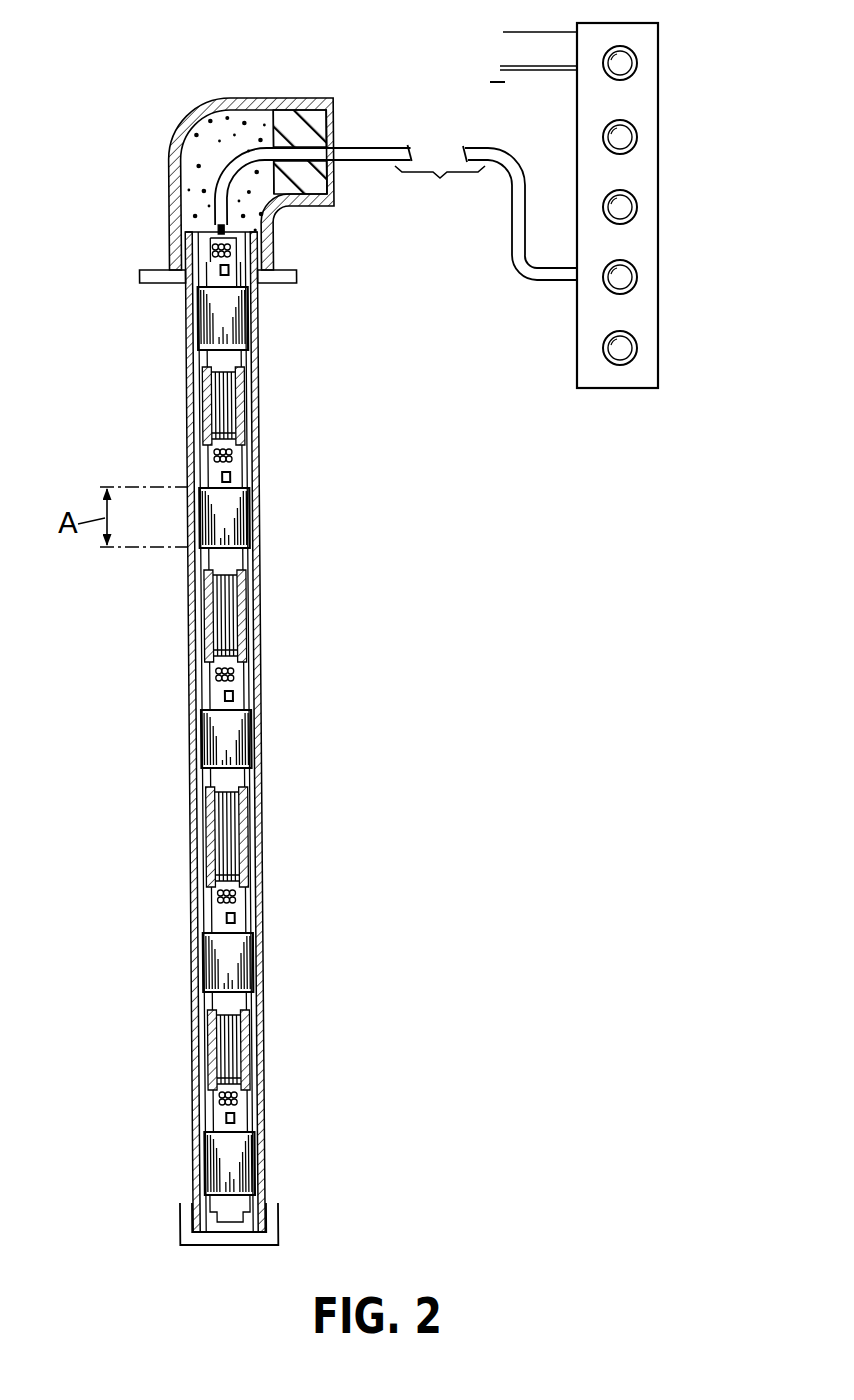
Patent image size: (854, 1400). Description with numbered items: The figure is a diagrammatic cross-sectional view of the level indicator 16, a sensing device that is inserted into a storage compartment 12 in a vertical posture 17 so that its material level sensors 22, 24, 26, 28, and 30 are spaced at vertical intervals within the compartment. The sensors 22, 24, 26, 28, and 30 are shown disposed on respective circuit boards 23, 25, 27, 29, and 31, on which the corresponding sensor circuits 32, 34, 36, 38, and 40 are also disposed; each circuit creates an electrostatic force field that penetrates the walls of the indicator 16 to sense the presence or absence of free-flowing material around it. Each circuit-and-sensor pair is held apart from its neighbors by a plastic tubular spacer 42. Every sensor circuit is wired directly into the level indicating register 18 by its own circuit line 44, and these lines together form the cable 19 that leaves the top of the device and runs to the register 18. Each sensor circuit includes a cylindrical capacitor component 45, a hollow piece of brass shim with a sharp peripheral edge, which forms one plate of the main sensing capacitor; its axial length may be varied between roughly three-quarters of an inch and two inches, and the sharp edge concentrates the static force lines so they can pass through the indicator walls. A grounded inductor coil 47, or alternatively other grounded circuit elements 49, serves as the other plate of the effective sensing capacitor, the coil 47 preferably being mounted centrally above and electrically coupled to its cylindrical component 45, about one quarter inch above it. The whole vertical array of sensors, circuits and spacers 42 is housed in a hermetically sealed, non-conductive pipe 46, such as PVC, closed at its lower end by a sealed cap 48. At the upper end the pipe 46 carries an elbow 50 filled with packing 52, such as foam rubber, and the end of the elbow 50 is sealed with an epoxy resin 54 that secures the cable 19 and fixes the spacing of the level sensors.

The storage compartment 12 is at (152, 270).
The level indicator 16 is at (209, 733).
The vertical posture 17 is at (268, 362).
The level indicating register 18 is at (563, 148).
The cable 19 is at (331, 151).
The material level sensor 22 is at (275, 1133).
The circuit board 23 is at (238, 1108).
The material level sensor 24 is at (270, 978).
The circuit board 25 is at (240, 903).
The material level sensor 26 is at (267, 730).
The circuit board 27 is at (239, 688).
The material level sensor 28 is at (270, 543).
The circuit board 29 is at (238, 480).
The material level sensor 30 is at (265, 311).
The circuit board 31 is at (238, 263).
The sensor circuit 32 is at (217, 1103).
The sensor circuit 34 is at (213, 903).
The sensor circuit 36 is at (213, 680).
The sensor circuit 38 is at (211, 456).
The sensor circuit 40 is at (215, 229).
The plastic tubular spacer 42 is at (238, 412).
The circuit line 44 is at (228, 412).
The cylindrical capacitor component 45 is at (220, 323).
The hermetically sealed pipe 46 is at (195, 973).
The inductor coil 47 is at (219, 274).
The sealed cap 48 is at (280, 1214).
The circuit elements 49 is at (212, 252).
The elbow 50 is at (207, 108).
The packing 52 is at (192, 173).
The epoxy resin 54 is at (288, 125).